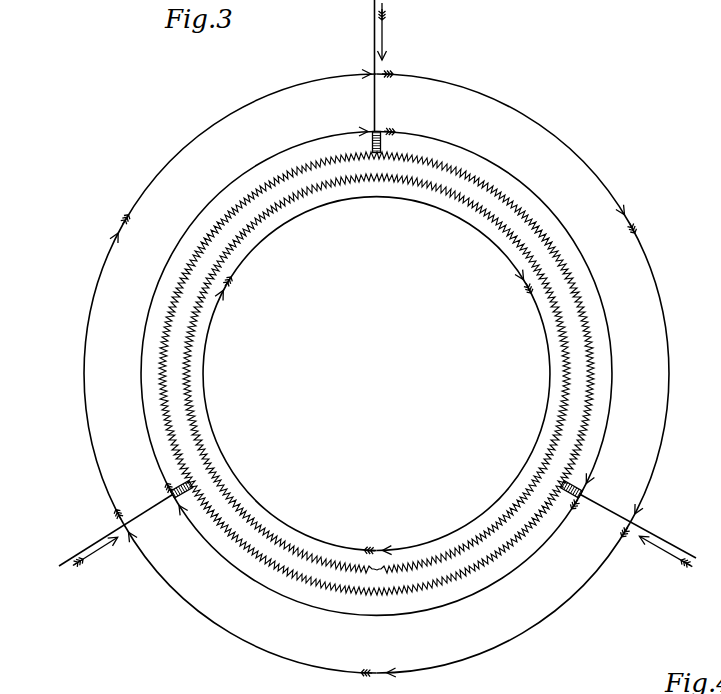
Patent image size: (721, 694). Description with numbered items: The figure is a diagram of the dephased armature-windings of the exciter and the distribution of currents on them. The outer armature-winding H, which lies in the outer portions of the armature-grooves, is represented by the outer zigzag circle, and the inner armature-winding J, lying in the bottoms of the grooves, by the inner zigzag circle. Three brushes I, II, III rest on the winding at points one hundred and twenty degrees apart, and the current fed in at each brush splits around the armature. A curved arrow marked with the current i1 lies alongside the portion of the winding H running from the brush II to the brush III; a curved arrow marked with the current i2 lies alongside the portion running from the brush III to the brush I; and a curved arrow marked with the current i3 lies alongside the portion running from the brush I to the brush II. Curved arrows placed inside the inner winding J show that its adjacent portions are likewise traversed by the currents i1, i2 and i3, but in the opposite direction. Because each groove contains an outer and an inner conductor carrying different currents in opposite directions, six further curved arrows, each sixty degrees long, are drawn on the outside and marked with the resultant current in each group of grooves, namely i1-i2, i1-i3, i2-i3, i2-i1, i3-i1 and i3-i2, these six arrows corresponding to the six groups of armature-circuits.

The outer armature-winding H is at (594, 384).
The inner armature-winding J is at (568, 386).
The brush I is at (126, 524).
The brush II is at (384, 78).
The brush III is at (628, 516).
The current i1 is at (614, 299).
The current i2 is at (402, 199).
The current i3 is at (521, 474).
The current i3 i2 i3-i2 is at (164, 118).
The current i1 i2 i1-i2 is at (503, 149).
The current i1 i3 i1-i3 is at (671, 452).
The current i2 i3 i2-i3 is at (503, 598).
The current i2 i1 i2-i1 is at (225, 631).
The current i3 i1 i3-i1 is at (75, 374).